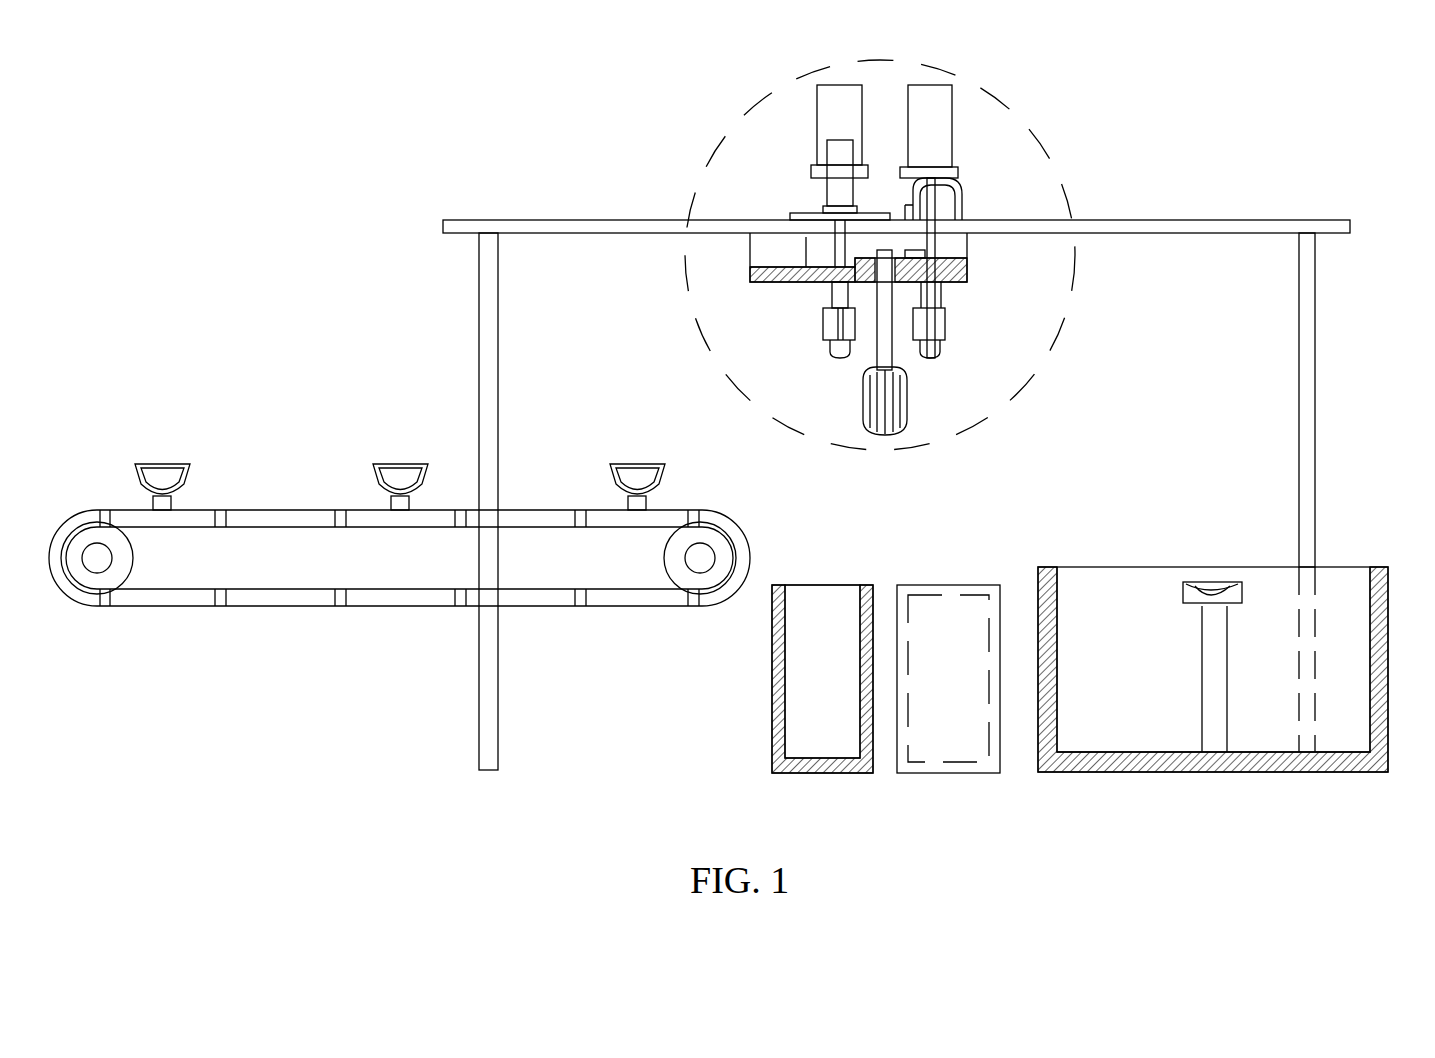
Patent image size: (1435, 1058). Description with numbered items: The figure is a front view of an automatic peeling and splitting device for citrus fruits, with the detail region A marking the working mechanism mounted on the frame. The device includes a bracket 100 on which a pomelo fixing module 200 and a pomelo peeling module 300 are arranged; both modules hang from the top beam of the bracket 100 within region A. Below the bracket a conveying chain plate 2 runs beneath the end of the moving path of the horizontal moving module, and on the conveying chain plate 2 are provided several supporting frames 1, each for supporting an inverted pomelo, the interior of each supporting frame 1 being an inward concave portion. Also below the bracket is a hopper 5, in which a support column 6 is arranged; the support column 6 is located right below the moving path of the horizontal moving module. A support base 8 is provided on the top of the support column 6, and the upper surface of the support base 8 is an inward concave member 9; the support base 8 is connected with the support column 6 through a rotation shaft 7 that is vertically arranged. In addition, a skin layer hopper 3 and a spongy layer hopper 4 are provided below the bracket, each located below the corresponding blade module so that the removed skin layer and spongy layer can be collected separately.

The supporting frame 1 is at (166, 478).
The conveying chain plate 2 is at (272, 513).
The skin layer hopper 3 is at (788, 702).
The spongy layer hopper 4 is at (960, 742).
The hopper 5 is at (1112, 742).
The support column 6 is at (1210, 722).
The rotation shaft 7 is at (1222, 606).
The support base 8 is at (1238, 598).
The inward concave member 9 is at (1232, 583).
The bracket 100 is at (1150, 217).
The pomelo fixing module 200 is at (968, 214).
The pomelo peeling module 300 is at (928, 380).
The mechanism detail region A is at (1012, 110).